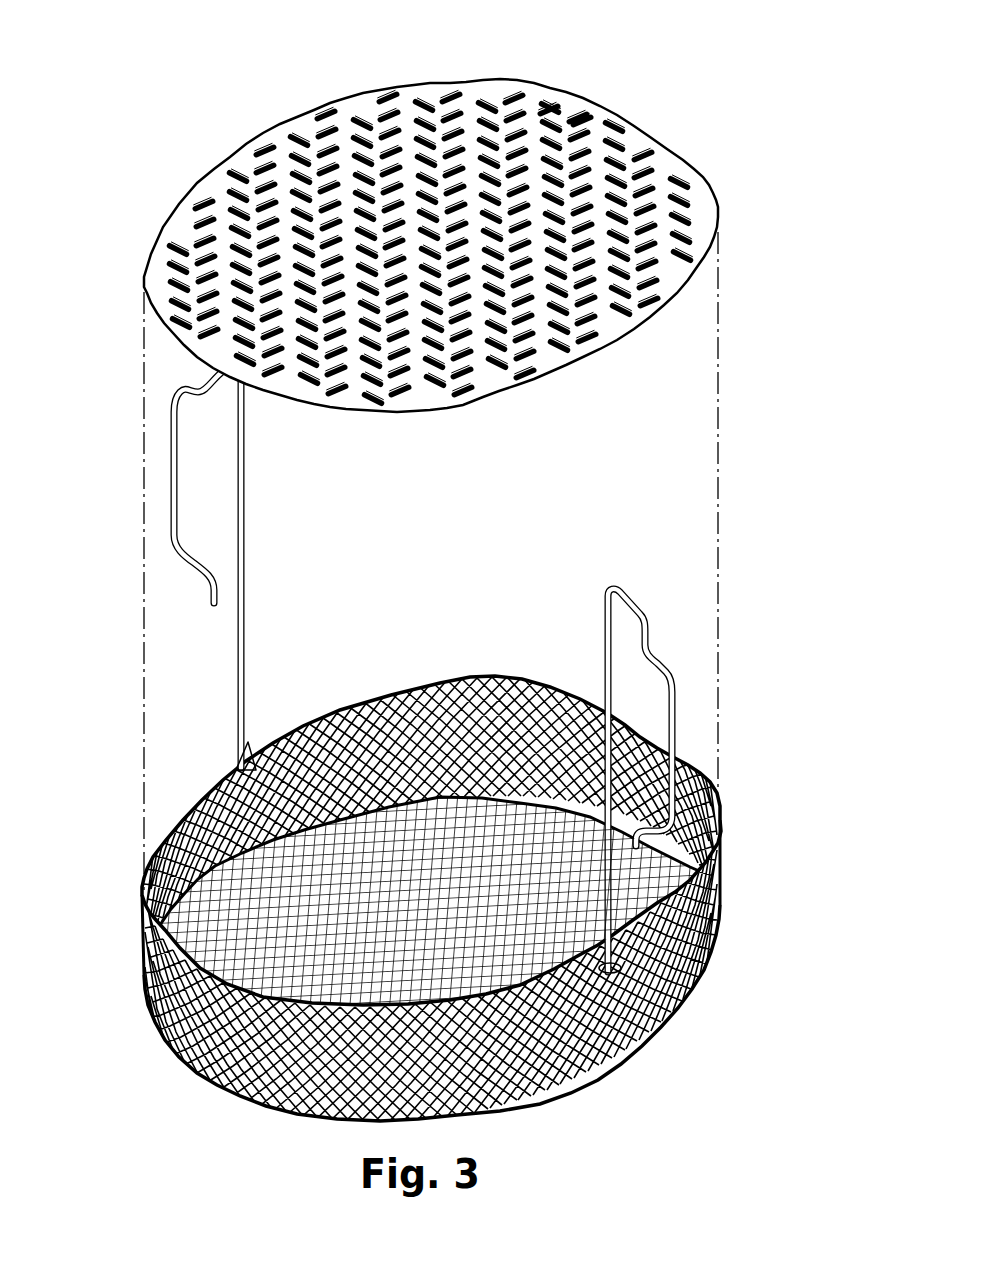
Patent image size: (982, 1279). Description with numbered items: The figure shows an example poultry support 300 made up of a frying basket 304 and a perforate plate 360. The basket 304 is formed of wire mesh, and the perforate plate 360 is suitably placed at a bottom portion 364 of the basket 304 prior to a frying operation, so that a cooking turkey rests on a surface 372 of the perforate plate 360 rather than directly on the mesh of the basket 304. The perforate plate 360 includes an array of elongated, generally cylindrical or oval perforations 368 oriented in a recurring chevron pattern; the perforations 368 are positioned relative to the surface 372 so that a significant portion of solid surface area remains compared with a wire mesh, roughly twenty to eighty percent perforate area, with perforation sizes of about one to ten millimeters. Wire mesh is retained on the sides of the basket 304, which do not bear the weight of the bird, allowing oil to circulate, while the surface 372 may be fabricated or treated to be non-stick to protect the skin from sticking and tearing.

The poultry support 300 is at (737, 138).
The frying basket 304 is at (722, 858).
The perforate plate 360 is at (479, 403).
The bottom portion 364 is at (320, 907).
The perforations 368 is at (613, 323).
The surface 372 is at (578, 120).